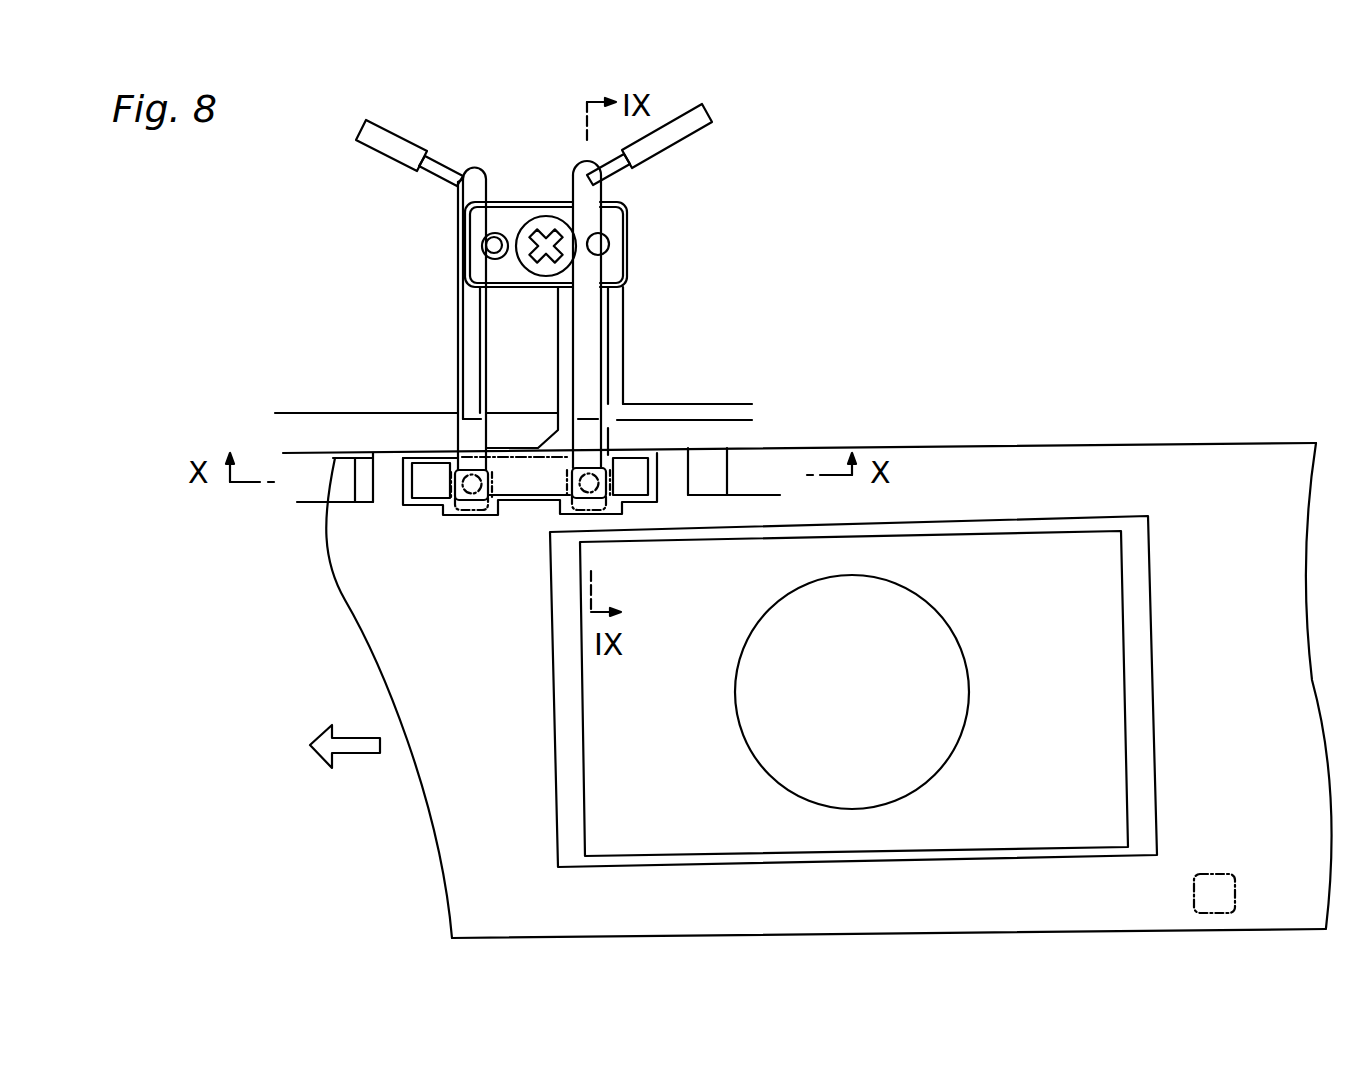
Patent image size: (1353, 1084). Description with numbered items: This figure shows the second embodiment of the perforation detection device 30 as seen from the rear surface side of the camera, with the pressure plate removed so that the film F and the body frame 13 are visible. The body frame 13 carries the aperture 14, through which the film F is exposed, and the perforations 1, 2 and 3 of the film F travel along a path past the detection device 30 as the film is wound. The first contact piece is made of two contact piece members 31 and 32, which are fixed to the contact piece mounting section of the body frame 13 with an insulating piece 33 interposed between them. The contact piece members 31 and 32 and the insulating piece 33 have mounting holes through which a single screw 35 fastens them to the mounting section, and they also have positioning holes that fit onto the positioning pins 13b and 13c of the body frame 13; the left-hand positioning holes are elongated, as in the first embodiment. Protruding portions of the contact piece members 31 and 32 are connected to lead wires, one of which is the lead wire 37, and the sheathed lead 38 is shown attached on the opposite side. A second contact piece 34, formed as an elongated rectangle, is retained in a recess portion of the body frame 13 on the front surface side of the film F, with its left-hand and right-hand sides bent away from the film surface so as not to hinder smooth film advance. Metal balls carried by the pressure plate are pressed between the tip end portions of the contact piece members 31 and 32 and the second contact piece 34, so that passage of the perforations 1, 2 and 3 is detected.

The perforation 1 is at (601, 514).
The perforation 2 is at (483, 515).
The perforation 3 is at (531, 484).
The body frame 13 is at (625, 370).
The positioning pin 13b is at (607, 237).
The positioning pin 13c is at (483, 240).
The aperture 14 is at (1010, 533).
The detection device 30 is at (640, 262).
The contact piece member 31 is at (606, 320).
The contact piece member 32 is at (457, 317).
The insulating piece 33 is at (517, 202).
The second contact piece 34 is at (422, 500).
The screw 35 is at (546, 216).
The lead wire 37 is at (700, 130).
The lead wire 38 is at (363, 145).
The film F is at (1077, 443).